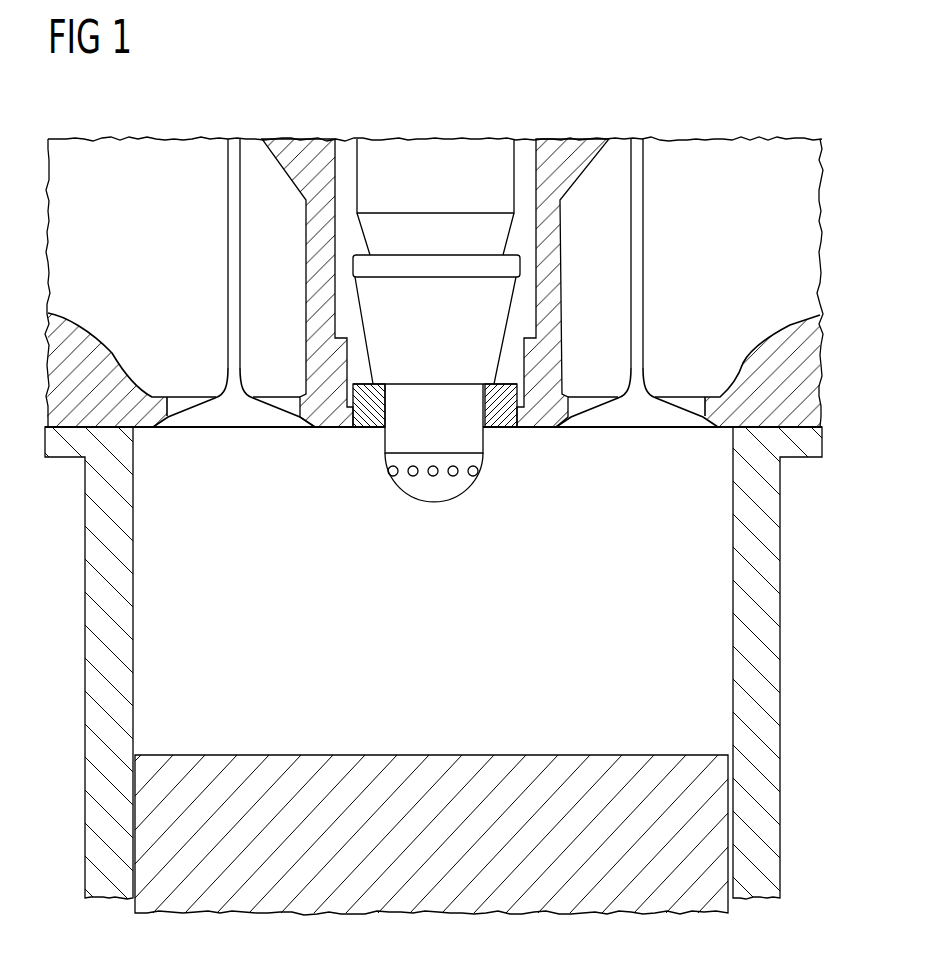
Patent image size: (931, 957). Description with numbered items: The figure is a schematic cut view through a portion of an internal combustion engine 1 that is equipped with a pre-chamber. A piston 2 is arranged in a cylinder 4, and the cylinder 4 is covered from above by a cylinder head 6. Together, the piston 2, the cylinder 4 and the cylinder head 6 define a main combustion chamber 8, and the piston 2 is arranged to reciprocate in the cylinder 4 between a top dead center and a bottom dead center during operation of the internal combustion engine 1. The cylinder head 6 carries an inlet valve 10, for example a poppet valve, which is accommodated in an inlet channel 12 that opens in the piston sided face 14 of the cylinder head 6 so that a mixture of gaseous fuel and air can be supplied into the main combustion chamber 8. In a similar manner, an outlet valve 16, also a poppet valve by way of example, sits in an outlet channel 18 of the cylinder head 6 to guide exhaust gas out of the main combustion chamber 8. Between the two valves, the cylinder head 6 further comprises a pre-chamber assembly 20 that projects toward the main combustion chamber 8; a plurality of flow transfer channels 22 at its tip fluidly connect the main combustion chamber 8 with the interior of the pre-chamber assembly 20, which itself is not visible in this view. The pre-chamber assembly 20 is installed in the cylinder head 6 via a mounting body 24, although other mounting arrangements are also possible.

The internal combustion engine 1 is at (455, 96).
The piston 2 is at (577, 767).
The cylinder 4 is at (772, 647).
The cylinder head 6 is at (304, 155).
The main combustion chamber 8 is at (441, 657).
The inlet valve 10 is at (232, 418).
The inlet channel 12 is at (193, 158).
The piston sided face 14 is at (326, 435).
The outlet valve 16 is at (642, 415).
The outlet channel 18 is at (695, 150).
The pre-chamber assembly 20 is at (545, 274).
The flow transfer channels 22 is at (390, 467).
The mounting body 24 is at (505, 430).